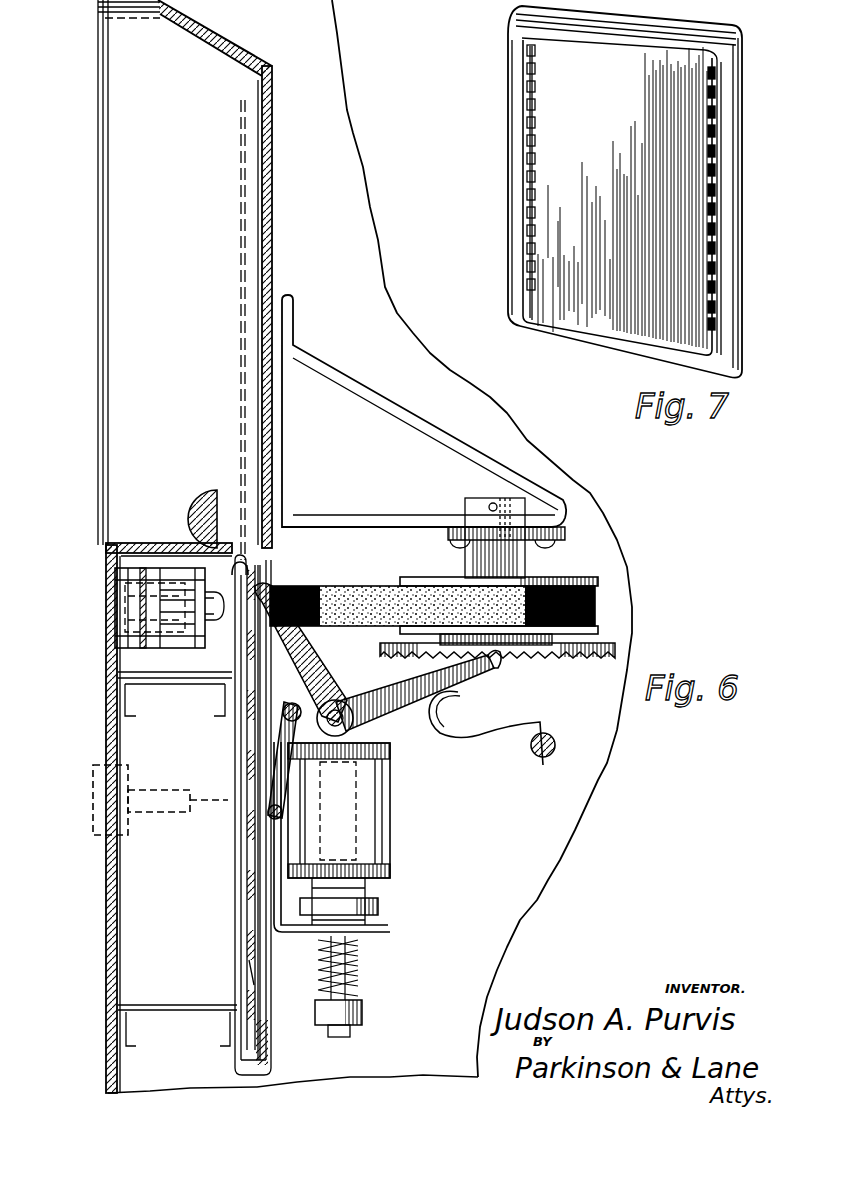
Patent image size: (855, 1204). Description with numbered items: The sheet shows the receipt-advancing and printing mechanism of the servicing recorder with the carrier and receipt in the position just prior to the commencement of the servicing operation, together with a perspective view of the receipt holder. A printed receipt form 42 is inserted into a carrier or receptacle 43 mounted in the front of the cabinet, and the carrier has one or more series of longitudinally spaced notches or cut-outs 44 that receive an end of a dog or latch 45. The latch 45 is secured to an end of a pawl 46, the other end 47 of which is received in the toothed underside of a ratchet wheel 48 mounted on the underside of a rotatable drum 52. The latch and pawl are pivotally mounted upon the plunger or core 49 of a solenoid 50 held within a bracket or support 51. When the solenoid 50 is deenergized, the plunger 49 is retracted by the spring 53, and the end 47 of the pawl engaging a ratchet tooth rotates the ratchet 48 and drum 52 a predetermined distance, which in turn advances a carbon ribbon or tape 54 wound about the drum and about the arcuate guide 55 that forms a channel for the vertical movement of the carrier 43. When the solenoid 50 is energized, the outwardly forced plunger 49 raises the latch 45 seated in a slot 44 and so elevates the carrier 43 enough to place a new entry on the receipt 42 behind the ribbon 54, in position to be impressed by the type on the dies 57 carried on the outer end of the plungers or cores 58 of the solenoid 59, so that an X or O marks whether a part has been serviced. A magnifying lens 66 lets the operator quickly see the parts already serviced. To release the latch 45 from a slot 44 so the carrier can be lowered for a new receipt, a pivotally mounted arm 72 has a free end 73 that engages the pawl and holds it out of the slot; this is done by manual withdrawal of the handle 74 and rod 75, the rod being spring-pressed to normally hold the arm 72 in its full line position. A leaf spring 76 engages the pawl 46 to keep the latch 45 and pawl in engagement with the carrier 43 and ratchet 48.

In FIG. 6, the printed receipt form 42 is at (247, 866).
In FIG. 6, the carrier or receptacle 43 is at (272, 578).
In FIG. 7, the carrier or receptacle 43 is at (735, 216).
In FIG. 6, the notches or cut-outs 44 is at (252, 985).
In FIG. 7, the notches or cut-outs 44 is at (536, 157).
In FIG. 6, the dog or latch 45 is at (300, 596).
In FIG. 6, the pawl 46 is at (385, 696).
In FIG. 6, the end of pawl 47 is at (498, 664).
In FIG. 6, the ratchet wheel 48 is at (617, 648).
In FIG. 6, the plunger or core 49 is at (355, 722).
In FIG. 6, the solenoid 50 is at (392, 795).
In FIG. 6, the bracket or support 51 is at (392, 930).
In FIG. 6, the rotatable drum 52 is at (597, 581).
In FIG. 6, the spring 53 is at (360, 961).
In FIG. 6, the carbon ribbon or tape 54 is at (372, 590).
In FIG. 6, the arcuate guide 55 is at (240, 900).
In FIG. 6, the dies 57 is at (228, 580).
In FIG. 6, the plungers or cores 58 is at (180, 565).
In FIG. 6, the solenoid 59 is at (150, 604).
In FIG. 6, the magnifying lens 66 is at (200, 505).
In FIG. 6, the arm 72 is at (283, 737).
In FIG. 6, the free end of arm 73 is at (290, 700).
In FIG. 6, the handle 74 is at (75, 805).
In FIG. 6, the rod 75 is at (258, 790).
In FIG. 6, the leaf spring 76 is at (487, 733).